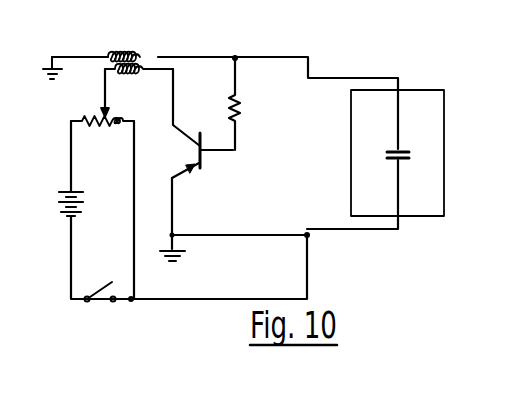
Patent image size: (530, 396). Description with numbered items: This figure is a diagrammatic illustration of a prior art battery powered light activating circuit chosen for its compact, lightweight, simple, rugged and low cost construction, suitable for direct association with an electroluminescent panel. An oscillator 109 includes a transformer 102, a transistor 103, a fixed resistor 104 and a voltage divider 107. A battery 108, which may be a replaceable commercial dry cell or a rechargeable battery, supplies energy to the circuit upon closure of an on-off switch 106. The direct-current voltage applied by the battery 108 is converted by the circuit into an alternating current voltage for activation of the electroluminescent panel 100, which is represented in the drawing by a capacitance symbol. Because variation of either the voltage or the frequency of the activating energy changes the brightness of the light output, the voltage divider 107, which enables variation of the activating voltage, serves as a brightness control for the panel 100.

The electroluminescent panel 100 is at (426, 89).
The transformer 102 is at (136, 52).
The transistor 103 is at (204, 153).
The fixed resistor 104 is at (238, 113).
The on-off switch 106 is at (104, 292).
The voltage divider 107 is at (130, 112).
The battery 108 is at (62, 190).
The oscillator 109 is at (305, 44).